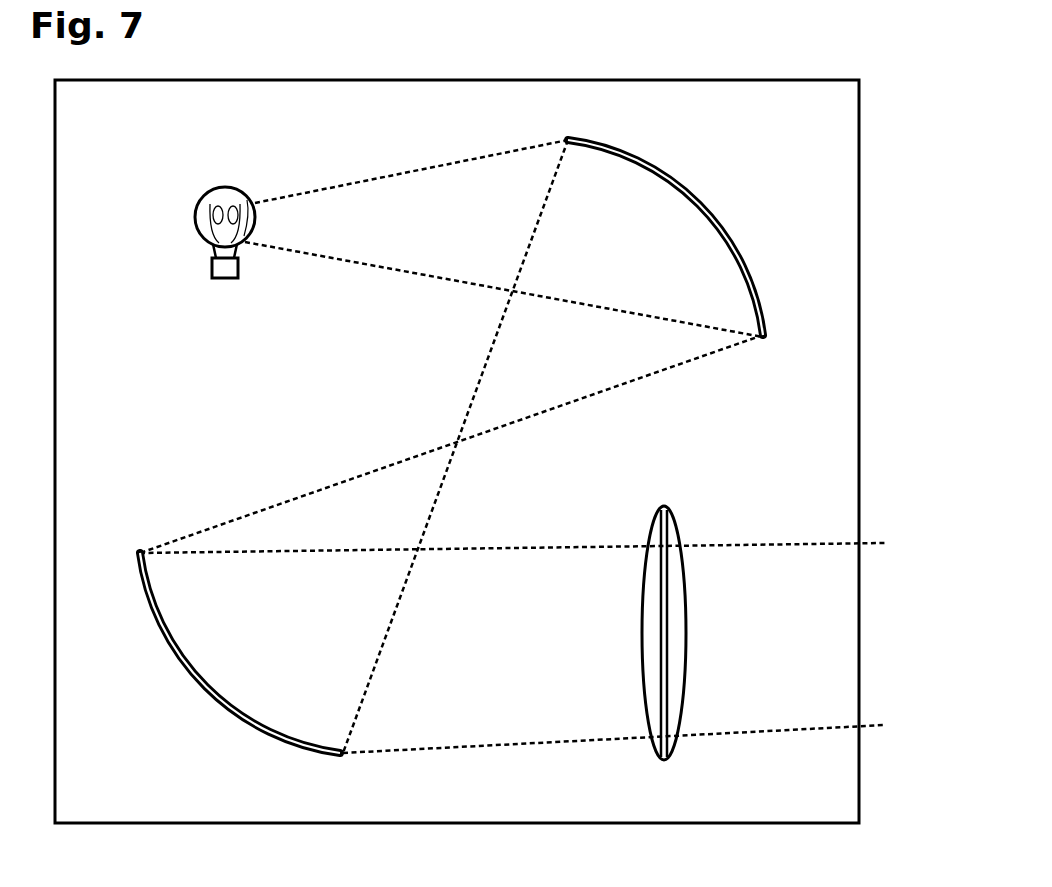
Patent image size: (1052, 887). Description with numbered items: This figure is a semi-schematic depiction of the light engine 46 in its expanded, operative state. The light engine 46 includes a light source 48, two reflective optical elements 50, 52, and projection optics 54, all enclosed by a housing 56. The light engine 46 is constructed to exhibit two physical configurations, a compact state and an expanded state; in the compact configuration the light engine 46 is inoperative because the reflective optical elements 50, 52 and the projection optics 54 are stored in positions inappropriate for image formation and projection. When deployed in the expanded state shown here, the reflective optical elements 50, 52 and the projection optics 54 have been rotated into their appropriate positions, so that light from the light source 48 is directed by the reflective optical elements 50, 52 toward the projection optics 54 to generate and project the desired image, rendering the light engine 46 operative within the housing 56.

The light engine 46 is at (725, 60).
The light source 48 is at (226, 187).
The reflective optical element 50 is at (702, 212).
The reflective optical element 52 is at (193, 667).
The projection optics 54 is at (678, 738).
The housing 56 is at (797, 825).